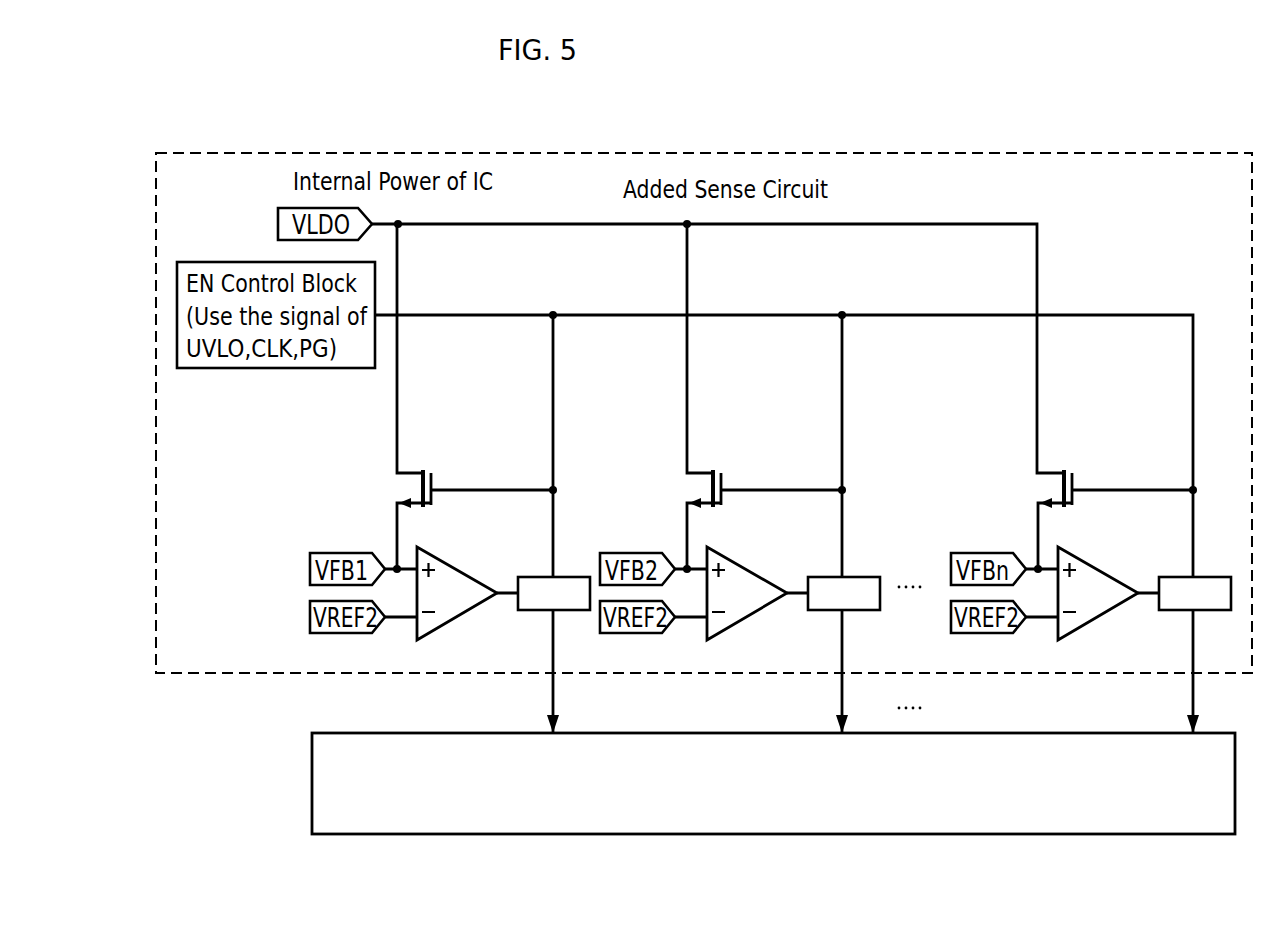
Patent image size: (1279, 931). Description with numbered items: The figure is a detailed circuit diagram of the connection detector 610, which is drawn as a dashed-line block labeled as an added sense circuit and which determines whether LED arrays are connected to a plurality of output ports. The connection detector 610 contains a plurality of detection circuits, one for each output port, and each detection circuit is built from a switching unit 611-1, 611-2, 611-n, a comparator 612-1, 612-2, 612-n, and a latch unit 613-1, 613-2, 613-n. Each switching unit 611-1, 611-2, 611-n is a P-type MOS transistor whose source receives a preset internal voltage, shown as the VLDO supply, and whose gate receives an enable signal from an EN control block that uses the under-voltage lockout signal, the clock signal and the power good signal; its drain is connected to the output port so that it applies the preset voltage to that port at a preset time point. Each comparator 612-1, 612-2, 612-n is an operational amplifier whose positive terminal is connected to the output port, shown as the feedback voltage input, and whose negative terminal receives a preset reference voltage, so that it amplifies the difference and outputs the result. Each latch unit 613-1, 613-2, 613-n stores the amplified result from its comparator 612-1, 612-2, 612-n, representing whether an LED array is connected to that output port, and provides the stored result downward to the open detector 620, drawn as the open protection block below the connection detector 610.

The connection detector 610 is at (1158, 152).
The switching unit 611-1 is at (417, 468).
The switching unit 611-2 is at (766, 496).
The switching unit 611-n is at (1117, 496).
The comparator 612-1 is at (467, 550).
The comparator 612-2 is at (753, 582).
The comparator 612-n is at (1104, 582).
The latch unit 613-1 is at (530, 612).
The latch unit 613-2 is at (825, 614).
The latch unit 613-n is at (1176, 614).
The open detector 620 is at (312, 773).